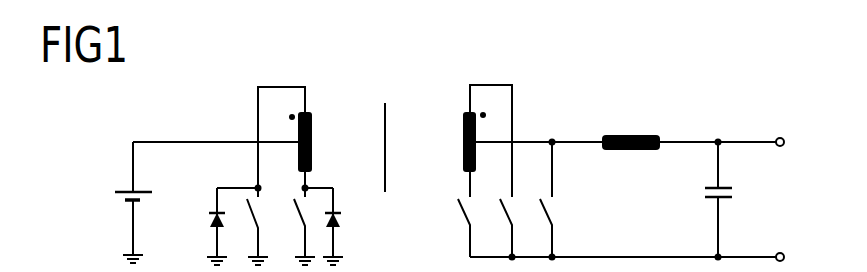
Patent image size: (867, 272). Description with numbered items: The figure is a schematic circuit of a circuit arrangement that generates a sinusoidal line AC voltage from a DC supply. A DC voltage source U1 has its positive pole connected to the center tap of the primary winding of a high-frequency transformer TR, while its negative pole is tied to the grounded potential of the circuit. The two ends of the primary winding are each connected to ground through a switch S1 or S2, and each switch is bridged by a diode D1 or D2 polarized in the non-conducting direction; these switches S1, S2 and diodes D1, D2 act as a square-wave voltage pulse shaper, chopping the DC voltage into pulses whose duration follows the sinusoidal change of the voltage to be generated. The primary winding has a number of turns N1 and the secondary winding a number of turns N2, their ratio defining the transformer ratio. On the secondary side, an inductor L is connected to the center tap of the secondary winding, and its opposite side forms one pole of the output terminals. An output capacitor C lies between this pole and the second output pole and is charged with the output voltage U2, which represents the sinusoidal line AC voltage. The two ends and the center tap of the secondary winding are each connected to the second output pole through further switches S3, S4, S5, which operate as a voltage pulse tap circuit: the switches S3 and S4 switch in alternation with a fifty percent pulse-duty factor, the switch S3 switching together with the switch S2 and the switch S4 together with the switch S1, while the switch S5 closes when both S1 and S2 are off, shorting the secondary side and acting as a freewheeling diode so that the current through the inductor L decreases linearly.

The DC voltage source U1 is at (98, 165).
The number of turns of the primary winding N1 is at (284, 121).
The high-frequency transformer TR is at (387, 121).
The diode D1 is at (207, 222).
The switch S1 is at (246, 222).
The switch S2 is at (291, 222).
The diode D2 is at (343, 222).
The number of turns of the secondary winding N2 is at (487, 123).
The further switch S3 is at (453, 228).
The further switch S4 is at (501, 230).
The further switch S5 is at (541, 200).
The inductor L is at (631, 124).
The output capacitor C is at (722, 200).
The output voltage U2 is at (797, 162).